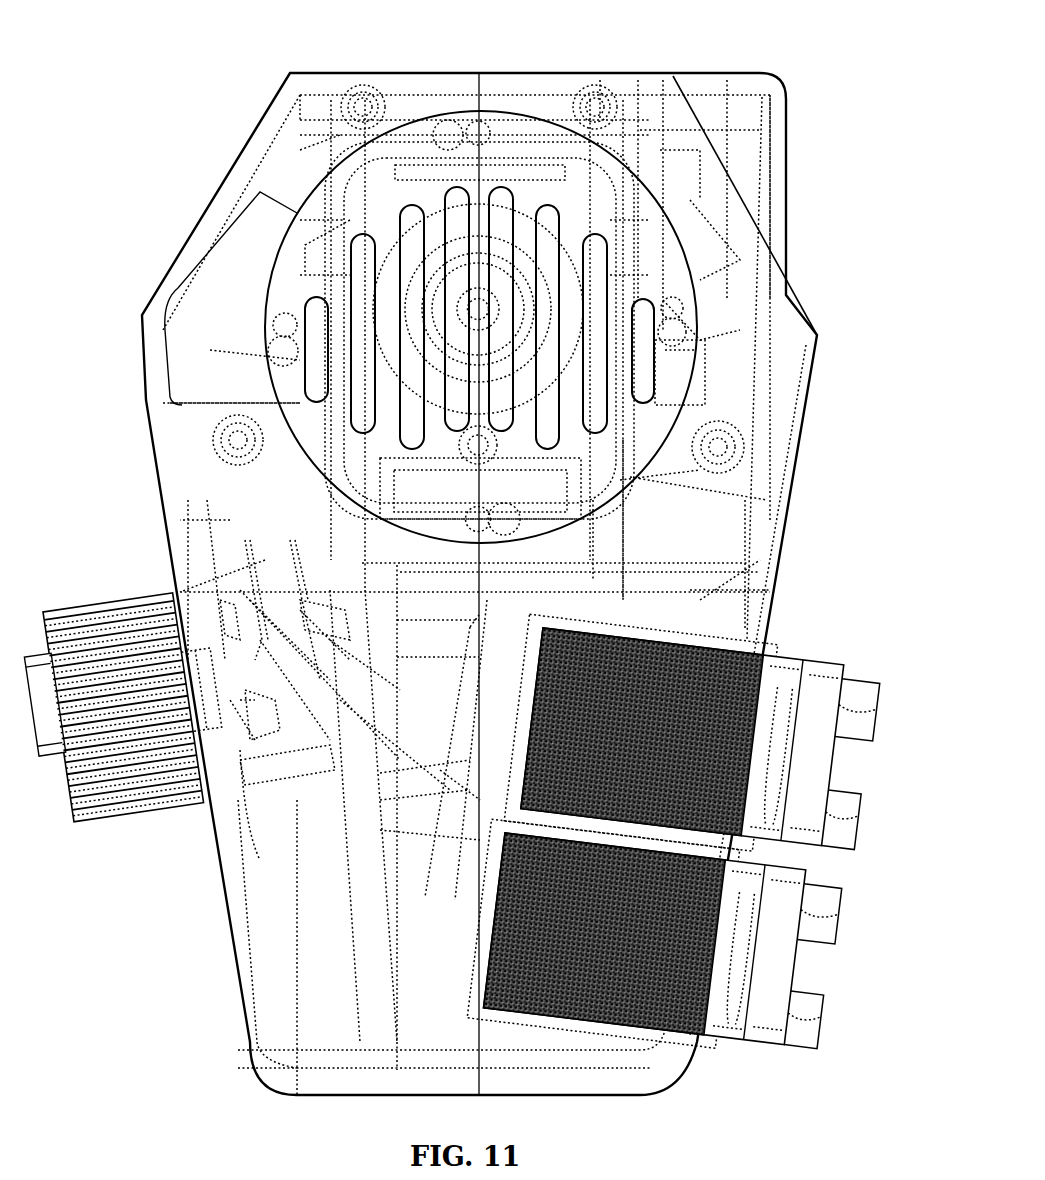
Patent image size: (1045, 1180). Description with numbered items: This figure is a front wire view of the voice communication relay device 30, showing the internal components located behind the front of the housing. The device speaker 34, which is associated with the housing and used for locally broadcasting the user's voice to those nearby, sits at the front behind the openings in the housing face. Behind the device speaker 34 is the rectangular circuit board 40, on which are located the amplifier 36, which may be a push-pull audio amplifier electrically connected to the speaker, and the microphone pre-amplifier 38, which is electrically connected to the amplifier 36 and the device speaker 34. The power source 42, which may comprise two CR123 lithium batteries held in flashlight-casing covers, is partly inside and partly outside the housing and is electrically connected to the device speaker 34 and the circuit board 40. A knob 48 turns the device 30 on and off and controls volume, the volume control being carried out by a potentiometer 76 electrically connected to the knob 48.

The voice communication relay device 30 is at (816, 66).
The device speaker 34 is at (287, 285).
The amplifier 36 is at (310, 183).
The microphone pre-amplifier 38 is at (320, 165).
The circuit board 40 is at (340, 143).
The power source 42 is at (822, 848).
The knob 48 is at (118, 600).
The potentiometer 76 is at (276, 770).